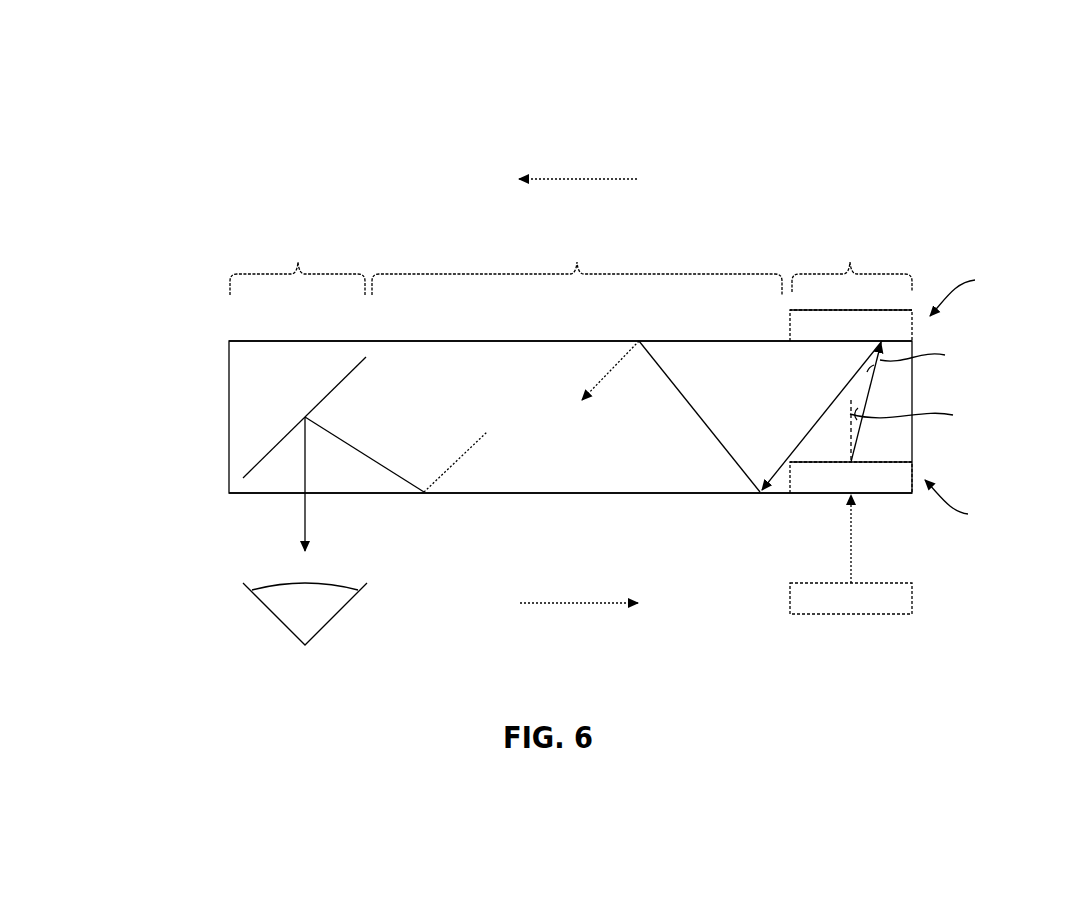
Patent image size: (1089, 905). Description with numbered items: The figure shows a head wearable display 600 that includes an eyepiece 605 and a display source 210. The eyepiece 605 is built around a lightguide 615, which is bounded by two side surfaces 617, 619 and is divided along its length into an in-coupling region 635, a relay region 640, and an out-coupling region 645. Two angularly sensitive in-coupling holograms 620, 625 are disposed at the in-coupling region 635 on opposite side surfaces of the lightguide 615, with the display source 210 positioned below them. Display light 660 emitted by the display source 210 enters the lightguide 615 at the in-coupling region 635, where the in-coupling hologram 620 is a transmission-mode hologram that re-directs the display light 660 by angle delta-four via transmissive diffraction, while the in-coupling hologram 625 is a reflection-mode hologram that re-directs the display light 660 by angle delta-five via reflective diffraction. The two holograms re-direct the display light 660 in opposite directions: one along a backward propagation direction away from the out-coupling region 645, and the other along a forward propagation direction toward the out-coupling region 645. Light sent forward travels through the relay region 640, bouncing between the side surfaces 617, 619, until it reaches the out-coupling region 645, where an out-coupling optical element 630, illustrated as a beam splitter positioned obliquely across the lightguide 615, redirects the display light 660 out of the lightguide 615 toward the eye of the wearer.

The head wearable display 600 is at (185, 110).
The eyepiece 605 is at (219, 529).
The lightguide 615 is at (570, 417).
The side surface 617 is at (520, 493).
The side surface 619 is at (440, 341).
The in-coupling hologram 620 is at (851, 477).
The in-coupling hologram 625 is at (851, 325).
The out-coupling optical element 630 is at (320, 397).
The in-coupling region 635 is at (852, 252).
The relay region 640 is at (577, 259).
The out-coupling region 645 is at (297, 253).
The display light 660 is at (710, 425).
The display source 210 is at (851, 554).